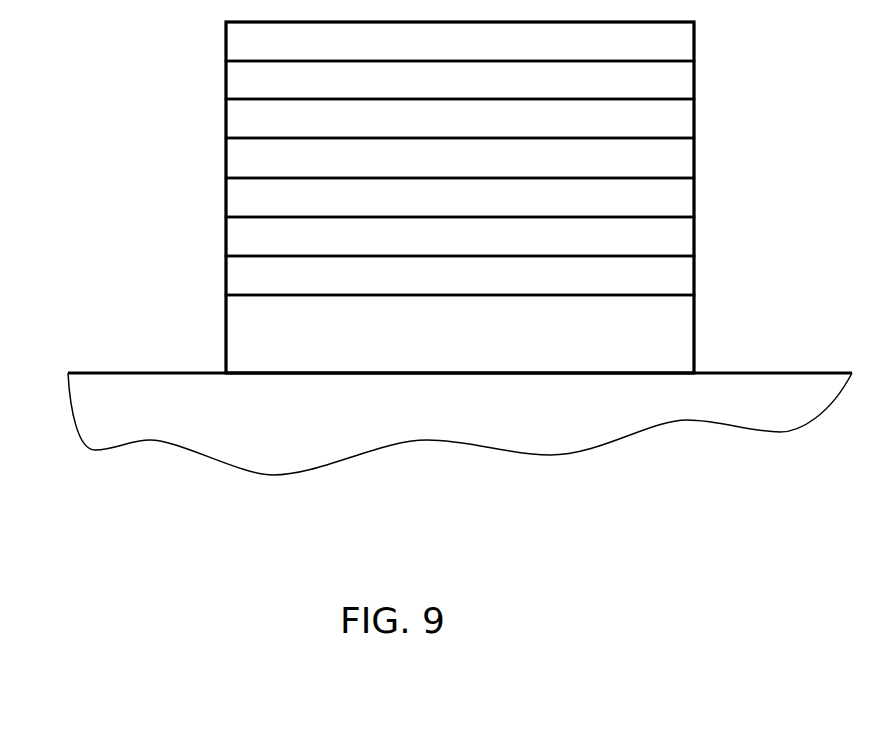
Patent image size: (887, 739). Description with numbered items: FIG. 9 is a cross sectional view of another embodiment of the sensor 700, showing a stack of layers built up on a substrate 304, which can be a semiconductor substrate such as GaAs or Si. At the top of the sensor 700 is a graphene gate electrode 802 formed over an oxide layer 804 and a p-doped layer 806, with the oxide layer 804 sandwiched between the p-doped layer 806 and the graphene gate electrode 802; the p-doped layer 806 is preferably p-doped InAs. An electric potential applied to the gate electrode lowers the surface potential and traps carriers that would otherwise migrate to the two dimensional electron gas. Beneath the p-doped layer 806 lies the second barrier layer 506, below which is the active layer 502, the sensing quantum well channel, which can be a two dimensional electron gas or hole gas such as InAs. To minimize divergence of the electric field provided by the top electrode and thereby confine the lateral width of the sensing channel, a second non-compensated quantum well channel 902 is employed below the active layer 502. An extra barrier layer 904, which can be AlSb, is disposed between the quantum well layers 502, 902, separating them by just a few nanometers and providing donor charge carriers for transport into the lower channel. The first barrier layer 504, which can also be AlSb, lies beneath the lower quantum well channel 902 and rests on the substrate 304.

The sensor 700 is at (406, 197).
The graphene gate electrode 802 is at (580, 44).
The oxide layer 804 is at (580, 84).
The p-doped layer 806 is at (580, 121).
The second barrier layer 506 is at (580, 162).
The active layer 502 is at (582, 201).
The extra barrier layer 904 is at (582, 238).
The second non-compensated quantum well channel 902 is at (582, 277).
The first barrier layer 504 is at (582, 334).
The substrate 304 is at (549, 405).